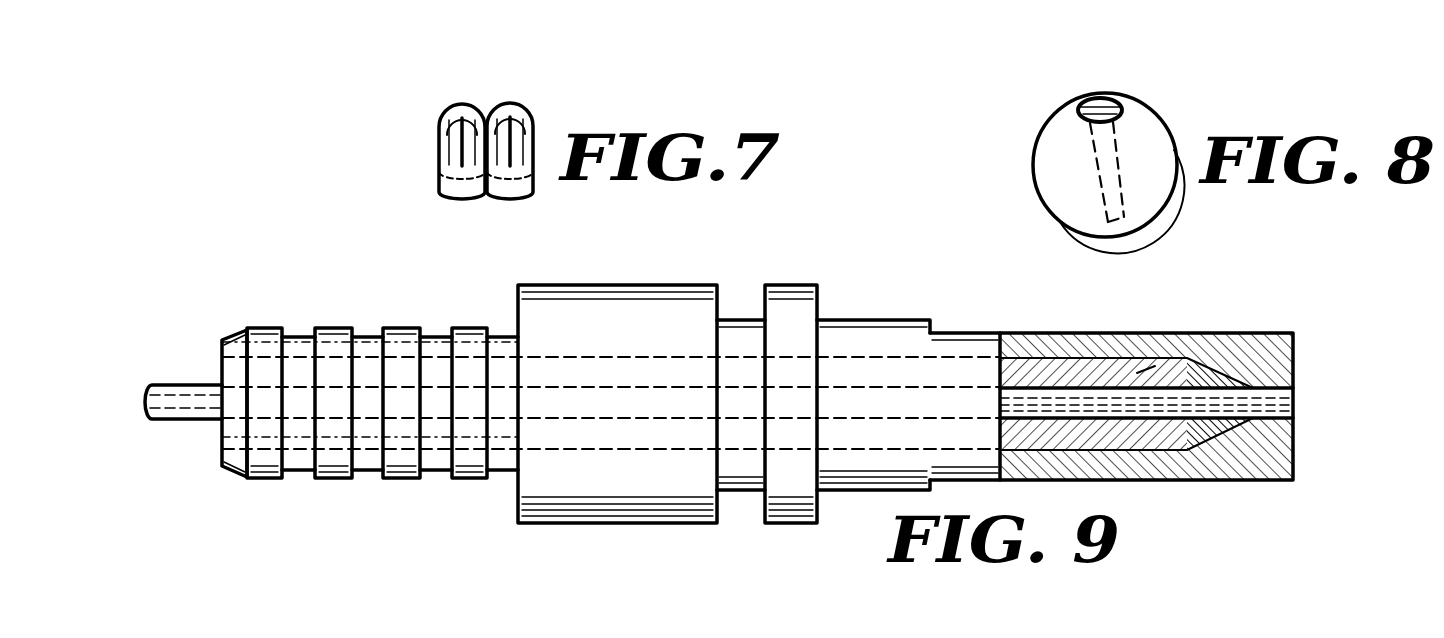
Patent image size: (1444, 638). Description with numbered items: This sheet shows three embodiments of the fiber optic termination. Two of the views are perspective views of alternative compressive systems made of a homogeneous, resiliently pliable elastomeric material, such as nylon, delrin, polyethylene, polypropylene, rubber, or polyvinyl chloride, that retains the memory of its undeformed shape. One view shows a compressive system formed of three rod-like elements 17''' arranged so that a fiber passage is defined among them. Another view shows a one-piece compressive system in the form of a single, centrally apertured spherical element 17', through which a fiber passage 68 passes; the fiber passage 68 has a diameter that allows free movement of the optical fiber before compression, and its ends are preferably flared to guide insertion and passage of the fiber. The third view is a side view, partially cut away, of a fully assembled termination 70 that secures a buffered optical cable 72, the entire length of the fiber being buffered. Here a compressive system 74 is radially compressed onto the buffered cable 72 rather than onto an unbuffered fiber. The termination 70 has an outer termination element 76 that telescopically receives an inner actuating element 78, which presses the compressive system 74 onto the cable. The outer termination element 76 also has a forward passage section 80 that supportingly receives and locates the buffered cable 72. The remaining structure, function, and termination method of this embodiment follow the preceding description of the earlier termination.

In FIG. 7, the rod-like elements 17''' is at (464, 134).
In FIG. 8, the spherical element 17' is at (1088, 173).
In FIG. 8, the fiber passage 68 is at (1092, 96).
In FIG. 9, the termination 70 is at (1042, 330).
In FIG. 9, the buffered optical cable 72 is at (190, 416).
In FIG. 9, the compressive system 74 is at (1272, 456).
In FIG. 9, the outer termination element 76 is at (1113, 336).
In FIG. 9, the actuating element 78 is at (1165, 357).
In FIG. 9, the forward passage section 80 is at (1293, 393).